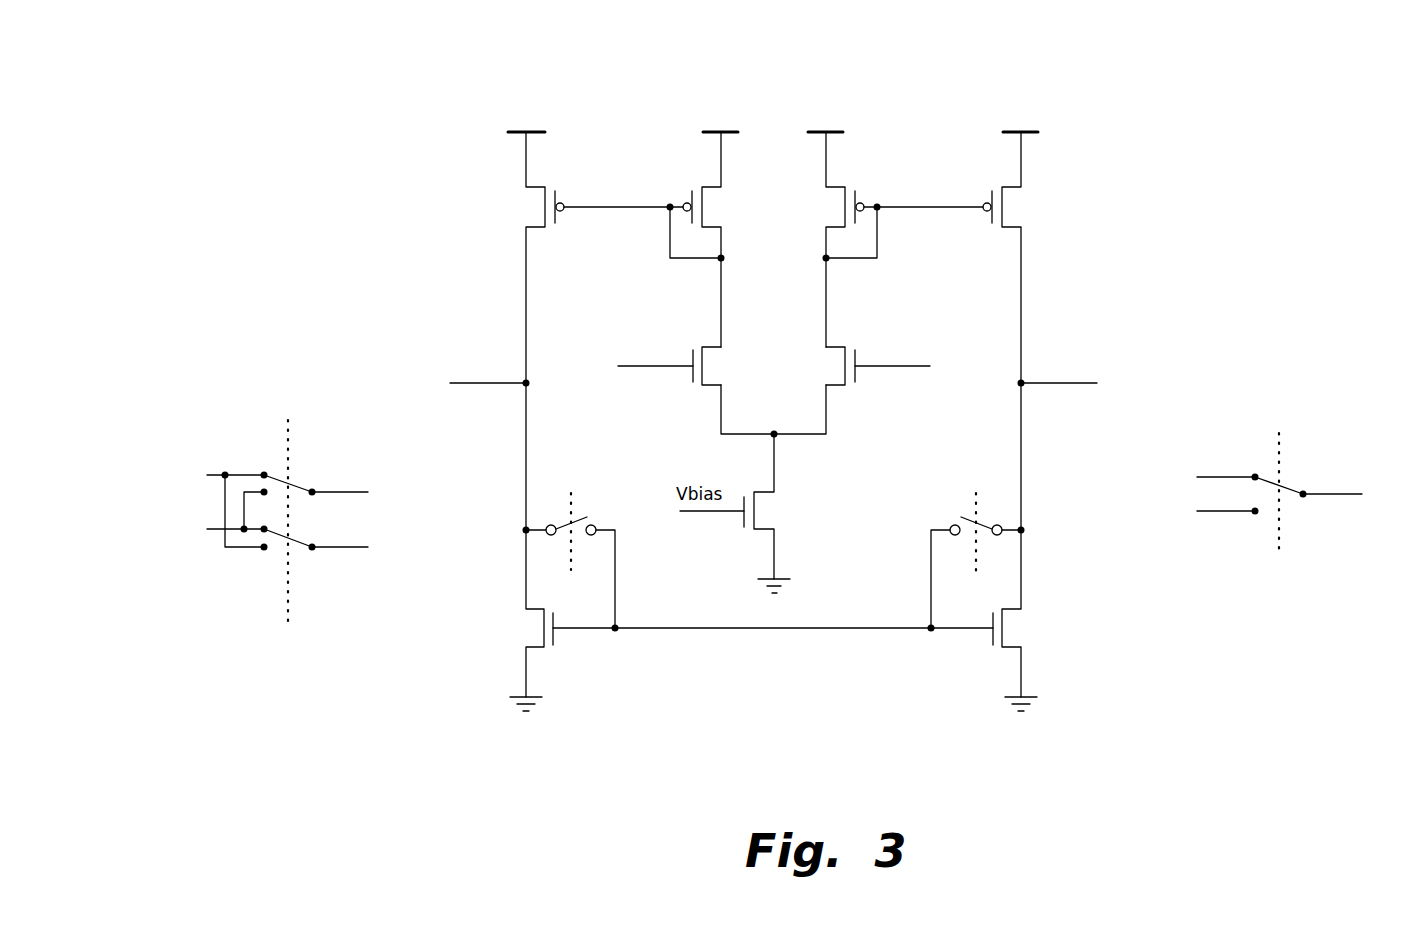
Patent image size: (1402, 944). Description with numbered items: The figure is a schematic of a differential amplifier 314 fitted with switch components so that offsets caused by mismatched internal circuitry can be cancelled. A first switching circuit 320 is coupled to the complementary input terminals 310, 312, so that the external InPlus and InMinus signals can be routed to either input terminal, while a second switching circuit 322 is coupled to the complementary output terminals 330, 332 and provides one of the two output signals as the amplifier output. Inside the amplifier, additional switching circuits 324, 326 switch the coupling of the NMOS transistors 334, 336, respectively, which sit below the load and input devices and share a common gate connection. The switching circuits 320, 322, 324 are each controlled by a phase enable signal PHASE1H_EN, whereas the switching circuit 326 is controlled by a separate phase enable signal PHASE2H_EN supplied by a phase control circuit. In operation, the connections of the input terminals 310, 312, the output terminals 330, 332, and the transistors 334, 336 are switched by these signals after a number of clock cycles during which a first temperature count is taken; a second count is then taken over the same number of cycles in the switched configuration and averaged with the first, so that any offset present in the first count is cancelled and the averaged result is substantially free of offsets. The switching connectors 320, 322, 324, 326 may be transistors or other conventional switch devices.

The complementary input terminal 310 is at (642, 367).
The complementary input terminal 312 is at (902, 367).
The differential amplifier 314 is at (1178, 115).
The first switching circuit 320 is at (263, 572).
The second switching circuit 322 is at (1222, 477).
The switching circuit 324 is at (596, 508).
The switching circuit 326 is at (951, 508).
The complementary output terminal 330 is at (482, 385).
The complementary output terminal 332 is at (1062, 385).
The NMOS transistor 334 is at (558, 637).
The NMOS transistor 336 is at (988, 637).